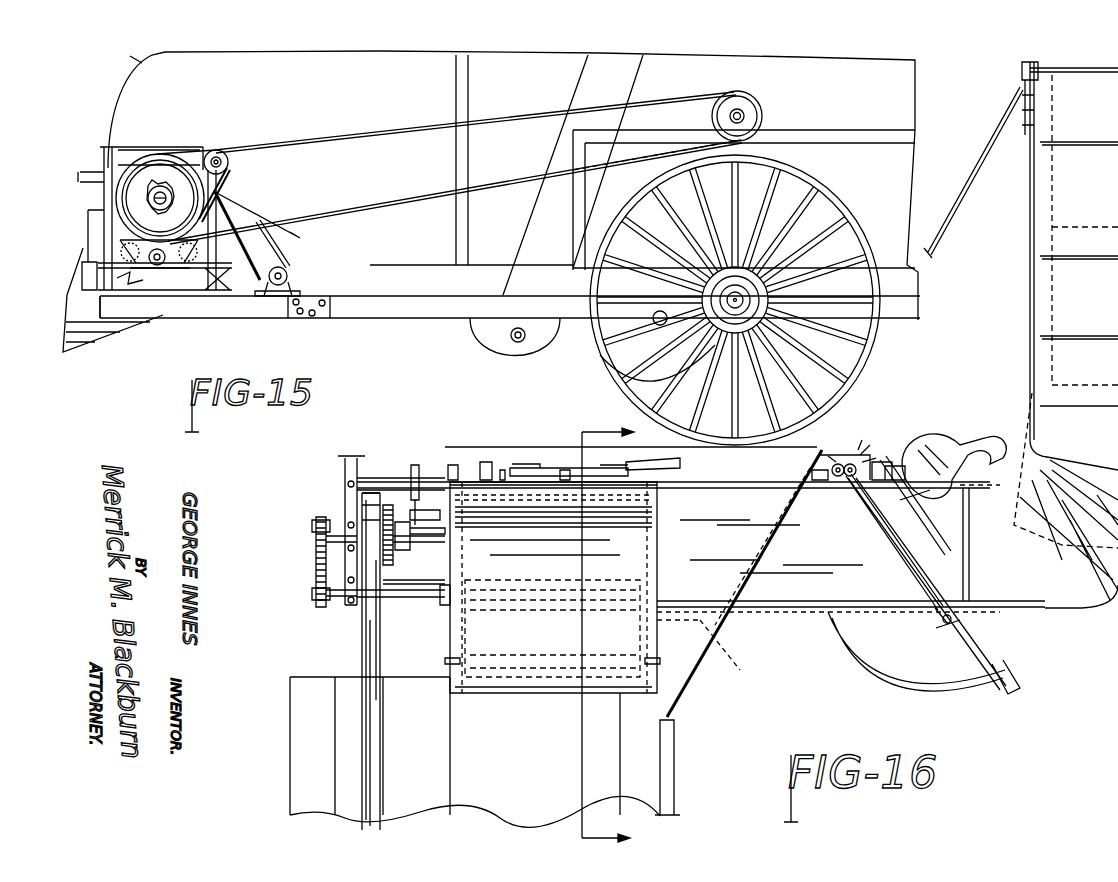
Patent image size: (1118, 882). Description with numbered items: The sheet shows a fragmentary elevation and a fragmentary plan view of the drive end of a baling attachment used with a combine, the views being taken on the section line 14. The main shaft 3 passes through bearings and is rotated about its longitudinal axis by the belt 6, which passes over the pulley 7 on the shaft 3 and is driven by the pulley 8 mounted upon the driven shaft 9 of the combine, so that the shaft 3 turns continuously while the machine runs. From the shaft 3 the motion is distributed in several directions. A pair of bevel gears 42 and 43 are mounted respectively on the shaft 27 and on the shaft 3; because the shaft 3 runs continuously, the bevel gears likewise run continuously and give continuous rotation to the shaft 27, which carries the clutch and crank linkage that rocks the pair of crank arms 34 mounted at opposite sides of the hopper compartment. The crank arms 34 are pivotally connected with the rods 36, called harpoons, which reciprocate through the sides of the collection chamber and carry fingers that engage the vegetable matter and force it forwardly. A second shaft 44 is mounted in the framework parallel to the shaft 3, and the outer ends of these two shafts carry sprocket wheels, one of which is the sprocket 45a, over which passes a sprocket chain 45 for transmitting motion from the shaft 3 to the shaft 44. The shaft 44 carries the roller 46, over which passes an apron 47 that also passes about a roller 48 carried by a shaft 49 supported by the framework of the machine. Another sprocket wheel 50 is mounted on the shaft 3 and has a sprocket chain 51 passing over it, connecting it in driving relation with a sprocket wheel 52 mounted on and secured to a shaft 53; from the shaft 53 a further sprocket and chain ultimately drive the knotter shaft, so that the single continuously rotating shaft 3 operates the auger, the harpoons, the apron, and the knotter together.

In FIG. 15, the shaft 3 is at (150, 199).
In FIG. 16, the shaft 3 is at (419, 554).
In FIG. 15, the belt 6 is at (260, 135).
In FIG. 16, the belt 6 is at (380, 622).
In FIG. 15, the pulley 7 is at (160, 170).
In FIG. 16, the pulley 7 is at (385, 505).
In FIG. 15, the pulley 8 is at (752, 108).
In FIG. 15, the driven shaft 9 is at (744, 117).
In FIG. 16, the section line 14 is at (616, 628).
In FIG. 16, the shaft 27 is at (416, 465).
In FIG. 16, the crank arms 34 is at (530, 466).
In FIG. 16, the rods 36 is at (575, 466).
In FIG. 16, the bevel gear 42 is at (420, 541).
In FIG. 16, the bevel gear 43 is at (400, 555).
In FIG. 15, the shaft 44 is at (217, 152).
In FIG. 16, the shaft 44 is at (422, 597).
In FIG. 15, the sprocket chain 45 is at (228, 172).
In FIG. 16, the sprocket chain 45 is at (316, 565).
In FIG. 15, the sprocket 45a is at (163, 210).
In FIG. 16, the sprocket 45a is at (314, 525).
In FIG. 16, the roller 46 is at (445, 606).
In FIG. 15, the apron 47 is at (248, 262).
In FIG. 16, the apron 47 is at (655, 630).
In FIG. 15, the roller 48 is at (271, 244).
In FIG. 16, the roller 48 is at (546, 652).
In FIG. 15, the shaft 49 is at (288, 276).
In FIG. 16, the shaft 49 is at (702, 652).
In FIG. 16, the sprocket wheel 50 is at (390, 505).
In FIG. 15, the sprocket chain 51 is at (205, 265).
In FIG. 15, the sprocket wheel 52 is at (176, 262).
In FIG. 15, the shaft 53 is at (158, 266).